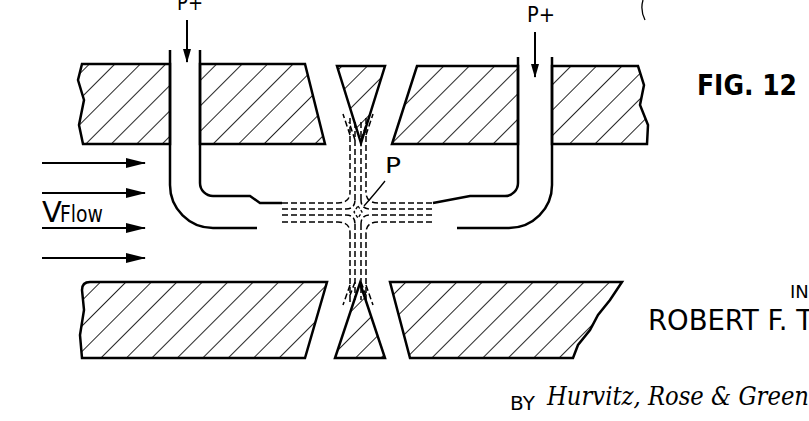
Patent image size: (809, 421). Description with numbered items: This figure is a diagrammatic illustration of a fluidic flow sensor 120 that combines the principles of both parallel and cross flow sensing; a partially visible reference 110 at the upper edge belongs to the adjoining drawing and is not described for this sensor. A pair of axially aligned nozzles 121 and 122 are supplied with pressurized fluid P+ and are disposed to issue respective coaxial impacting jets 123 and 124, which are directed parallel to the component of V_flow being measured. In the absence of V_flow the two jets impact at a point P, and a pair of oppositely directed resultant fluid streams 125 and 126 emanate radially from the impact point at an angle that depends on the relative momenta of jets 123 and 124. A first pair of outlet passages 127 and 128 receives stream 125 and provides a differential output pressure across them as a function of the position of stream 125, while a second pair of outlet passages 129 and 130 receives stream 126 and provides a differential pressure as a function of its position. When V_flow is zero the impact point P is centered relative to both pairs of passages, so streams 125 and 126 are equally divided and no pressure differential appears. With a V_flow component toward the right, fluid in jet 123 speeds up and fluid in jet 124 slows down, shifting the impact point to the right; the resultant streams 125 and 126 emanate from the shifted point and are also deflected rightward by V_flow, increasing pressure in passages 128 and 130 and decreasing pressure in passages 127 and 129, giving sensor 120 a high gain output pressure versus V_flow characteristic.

The fluidic device 110 is at (683, 0).
The flow sensor 120 is at (579, 43).
The nozzle 121 is at (266, 220).
The nozzle 122 is at (455, 212).
The impacting jet 123 is at (298, 203).
The impacting jet 124 is at (413, 203).
The resultant fluid stream 125 is at (352, 153).
The resultant fluid stream 126 is at (367, 260).
The outlet passage 127 is at (320, 72).
The outlet passage 128 is at (403, 70).
The outlet passage 129 is at (312, 352).
The outlet passage 130 is at (398, 350).